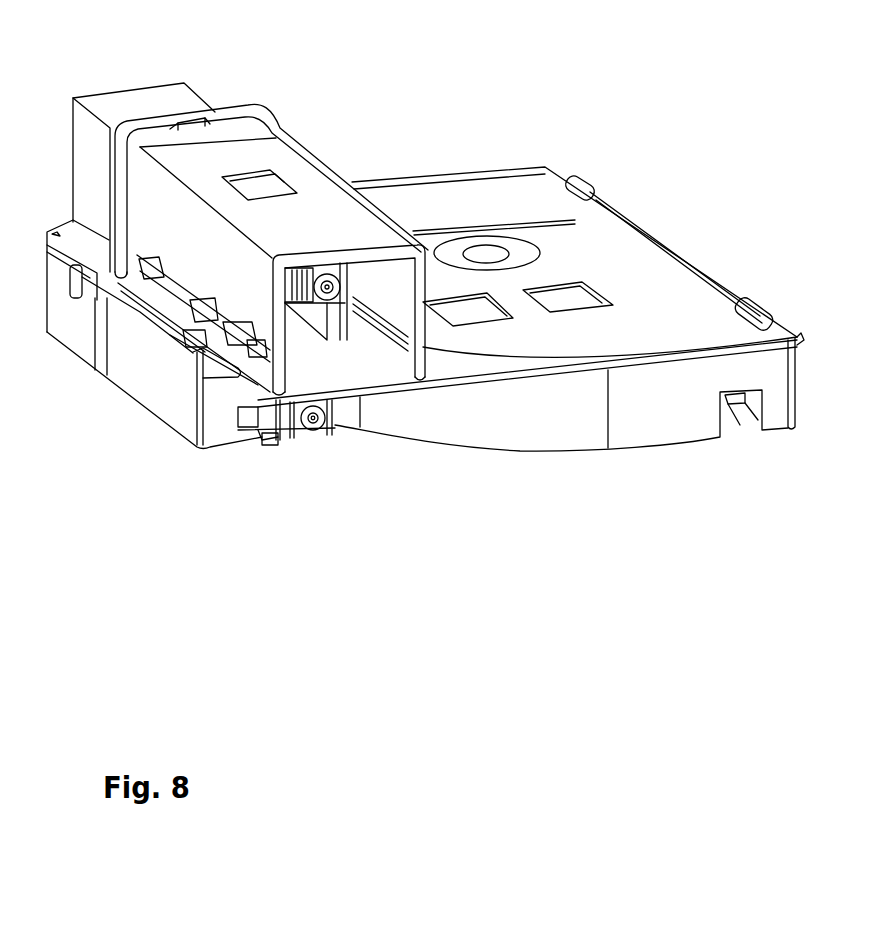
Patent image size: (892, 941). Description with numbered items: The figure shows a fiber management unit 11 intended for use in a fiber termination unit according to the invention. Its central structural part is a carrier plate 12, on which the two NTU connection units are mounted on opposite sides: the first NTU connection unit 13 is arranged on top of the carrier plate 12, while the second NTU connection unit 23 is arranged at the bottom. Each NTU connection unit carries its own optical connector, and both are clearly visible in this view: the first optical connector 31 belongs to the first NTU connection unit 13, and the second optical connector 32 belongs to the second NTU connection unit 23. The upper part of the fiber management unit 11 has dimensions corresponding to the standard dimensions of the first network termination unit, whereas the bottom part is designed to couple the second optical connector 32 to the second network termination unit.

The fiber management unit 11 is at (566, 129).
The carrier plate 12 is at (632, 407).
The first NTU connection unit 13 is at (310, 160).
The second NTU connection unit 23 is at (143, 407).
The first optical connector 31 is at (331, 297).
The second optical connector 32 is at (311, 426).